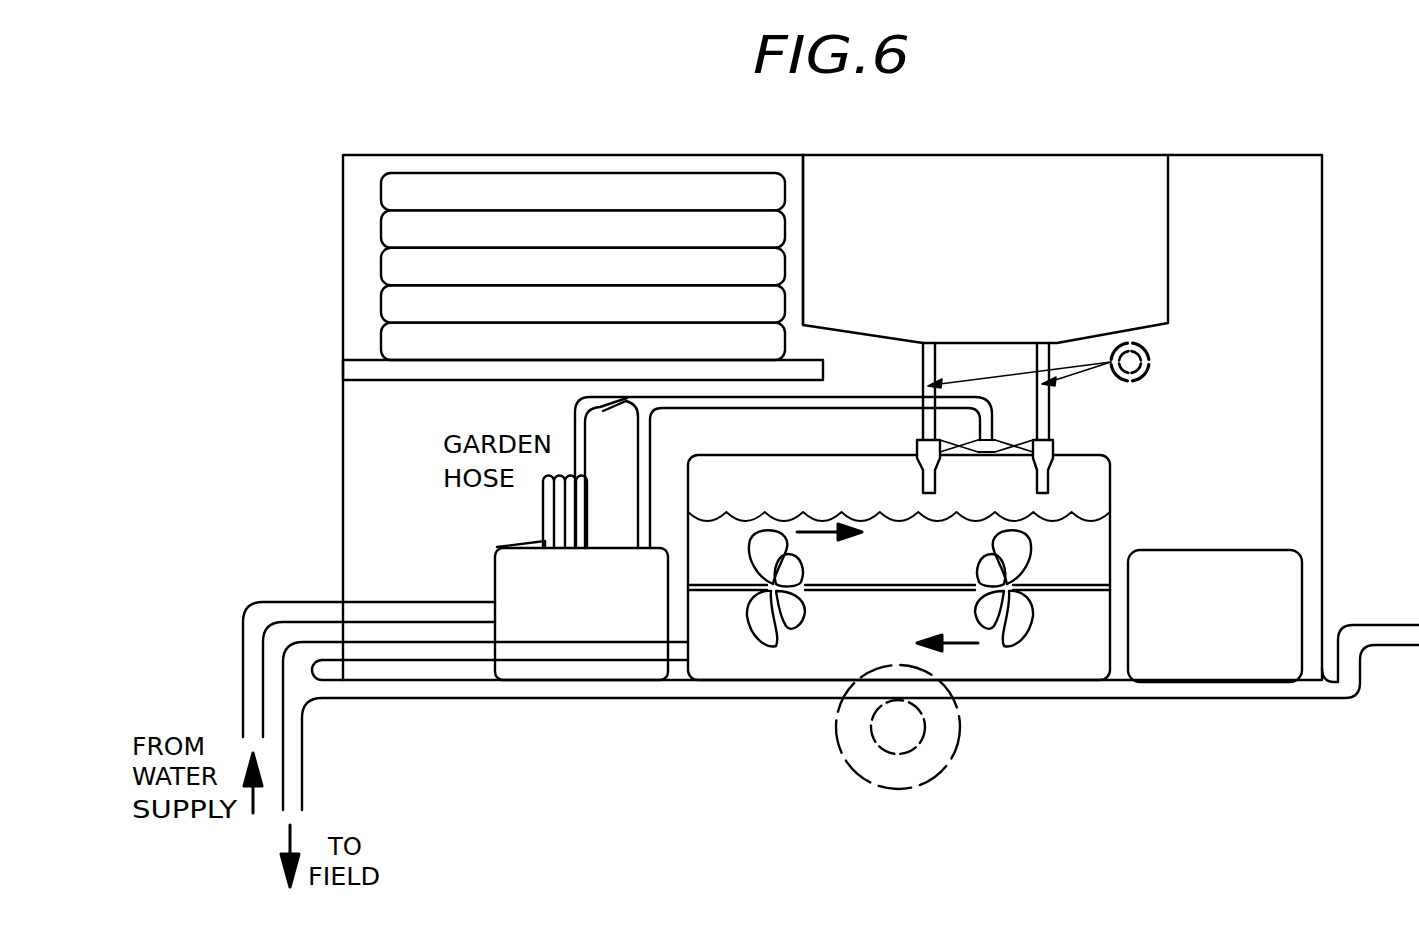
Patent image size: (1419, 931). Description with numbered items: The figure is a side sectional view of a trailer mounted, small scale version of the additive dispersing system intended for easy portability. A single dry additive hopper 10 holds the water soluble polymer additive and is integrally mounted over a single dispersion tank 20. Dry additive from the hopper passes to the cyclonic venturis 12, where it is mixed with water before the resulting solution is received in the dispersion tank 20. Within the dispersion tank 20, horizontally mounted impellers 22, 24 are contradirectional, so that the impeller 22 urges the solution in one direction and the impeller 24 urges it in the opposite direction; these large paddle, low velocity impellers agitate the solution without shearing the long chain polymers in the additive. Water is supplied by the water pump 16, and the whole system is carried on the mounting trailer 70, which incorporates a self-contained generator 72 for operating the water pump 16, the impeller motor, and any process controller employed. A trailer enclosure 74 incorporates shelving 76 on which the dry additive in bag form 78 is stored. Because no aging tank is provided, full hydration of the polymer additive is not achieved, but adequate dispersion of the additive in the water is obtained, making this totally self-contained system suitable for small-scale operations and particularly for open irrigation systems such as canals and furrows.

The dry additive hopper 10 is at (1170, 268).
The cyclonic venturis 12 is at (1047, 484).
The water pump 16 is at (493, 590).
The dispersion tank 20 is at (745, 683).
The impeller 22 is at (778, 645).
The impeller 24 is at (1027, 648).
The mounting trailer 70 is at (1185, 700).
The generator 72 is at (1245, 550).
The trailer enclosure 74 is at (340, 490).
The shelving 76 is at (456, 381).
The dry additive in bag form 78 is at (592, 193).